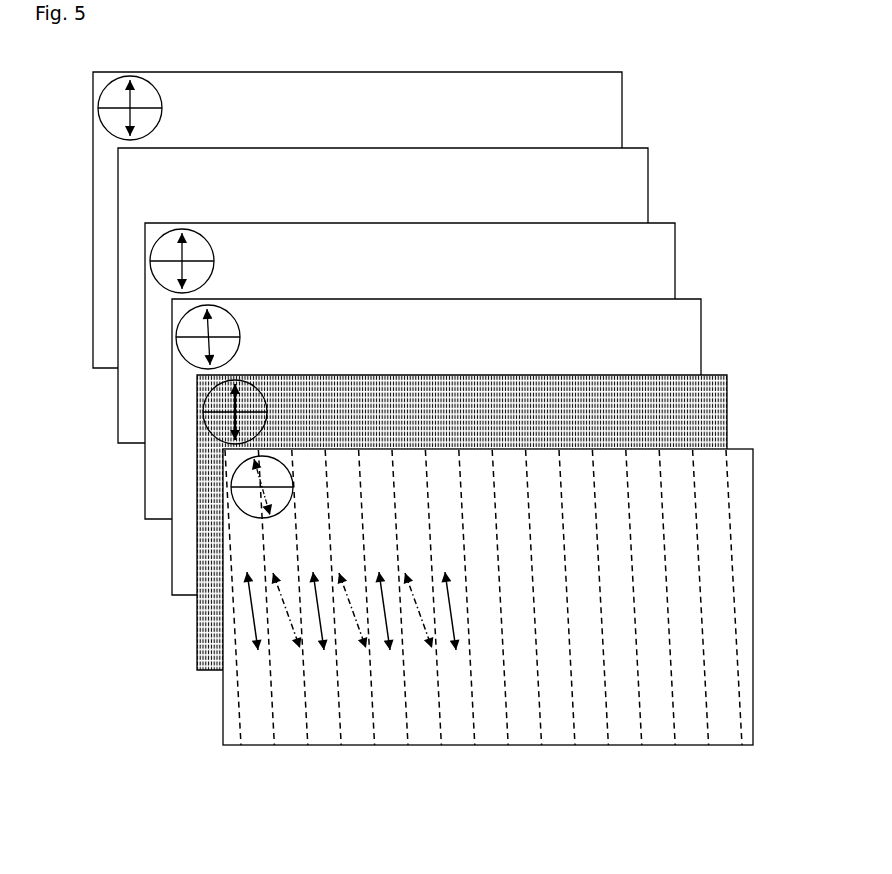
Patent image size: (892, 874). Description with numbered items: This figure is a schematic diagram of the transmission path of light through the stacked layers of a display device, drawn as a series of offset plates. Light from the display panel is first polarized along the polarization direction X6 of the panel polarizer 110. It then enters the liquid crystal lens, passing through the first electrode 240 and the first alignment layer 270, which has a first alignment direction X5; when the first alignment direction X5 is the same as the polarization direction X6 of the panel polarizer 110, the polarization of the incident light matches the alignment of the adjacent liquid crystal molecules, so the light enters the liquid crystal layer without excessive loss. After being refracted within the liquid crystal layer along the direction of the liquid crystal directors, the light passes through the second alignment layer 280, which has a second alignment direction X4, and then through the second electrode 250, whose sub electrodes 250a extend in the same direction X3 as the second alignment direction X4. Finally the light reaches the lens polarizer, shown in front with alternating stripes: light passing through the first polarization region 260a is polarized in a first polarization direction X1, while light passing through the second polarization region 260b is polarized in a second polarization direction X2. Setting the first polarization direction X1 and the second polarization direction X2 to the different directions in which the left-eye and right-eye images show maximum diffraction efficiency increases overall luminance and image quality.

The panel polarizer 110 is at (614, 93).
The first electrode 240 is at (638, 172).
The first alignment layer 270 is at (668, 258).
The second alignment layer 280 is at (693, 330).
The second electrode 250 is at (730, 398).
The sub electrodes 250a is at (712, 420).
The first polarization region 260a is at (423, 723).
The second polarization region 260b is at (459, 715).
The first polarization direction X1 is at (287, 618).
The second polarization direction X2 is at (250, 603).
The extension direction of sub electrodes X3 is at (235, 410).
The second alignment direction X4 is at (208, 328).
The first alignment direction X5 is at (182, 252).
The polarization direction X6 is at (130, 98).